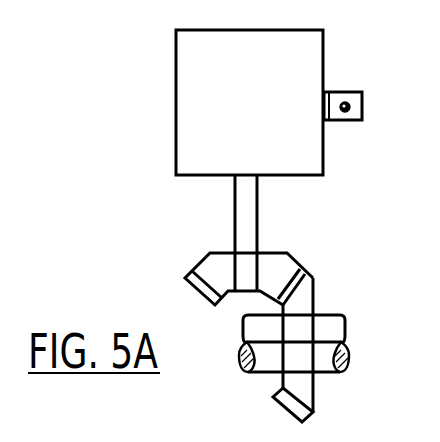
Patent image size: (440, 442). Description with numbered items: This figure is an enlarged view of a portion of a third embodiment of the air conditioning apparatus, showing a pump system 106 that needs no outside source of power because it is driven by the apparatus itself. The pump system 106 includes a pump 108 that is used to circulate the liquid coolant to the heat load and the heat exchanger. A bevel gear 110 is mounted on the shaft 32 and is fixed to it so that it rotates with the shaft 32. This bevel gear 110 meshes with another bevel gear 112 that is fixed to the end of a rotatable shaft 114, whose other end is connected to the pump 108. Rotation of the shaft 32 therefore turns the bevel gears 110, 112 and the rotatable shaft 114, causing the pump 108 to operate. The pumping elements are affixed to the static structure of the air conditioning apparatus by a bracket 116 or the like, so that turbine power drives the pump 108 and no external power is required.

The pump system 106 is at (138, 100).
The pump 108 is at (307, 53).
The bracket 116 is at (340, 92).
The rotatable shaft 114 is at (247, 208).
The bevel gear 112 is at (272, 267).
The bevel gear 110 is at (306, 298).
The shaft 32 is at (263, 332).